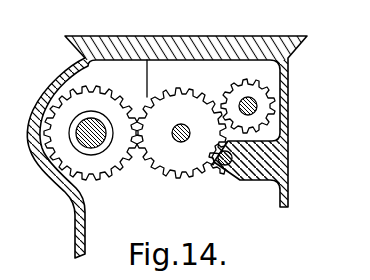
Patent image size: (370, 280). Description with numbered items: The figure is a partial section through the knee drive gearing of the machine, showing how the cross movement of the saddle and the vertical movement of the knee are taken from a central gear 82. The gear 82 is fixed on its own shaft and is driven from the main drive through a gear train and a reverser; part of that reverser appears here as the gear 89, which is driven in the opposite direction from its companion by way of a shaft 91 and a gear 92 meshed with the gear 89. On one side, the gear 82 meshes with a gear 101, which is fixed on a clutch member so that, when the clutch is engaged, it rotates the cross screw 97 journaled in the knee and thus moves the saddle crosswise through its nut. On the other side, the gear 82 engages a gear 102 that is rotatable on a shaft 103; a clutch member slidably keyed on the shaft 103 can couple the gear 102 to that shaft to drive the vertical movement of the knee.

The gear 82 is at (182, 89).
The gear 89 is at (190, 150).
The shaft 91 is at (238, 181).
The gear 92 is at (220, 172).
The cross screw 97 is at (252, 100).
The gear 101 is at (268, 102).
The gear 102 is at (105, 90).
The shaft 103 is at (105, 153).